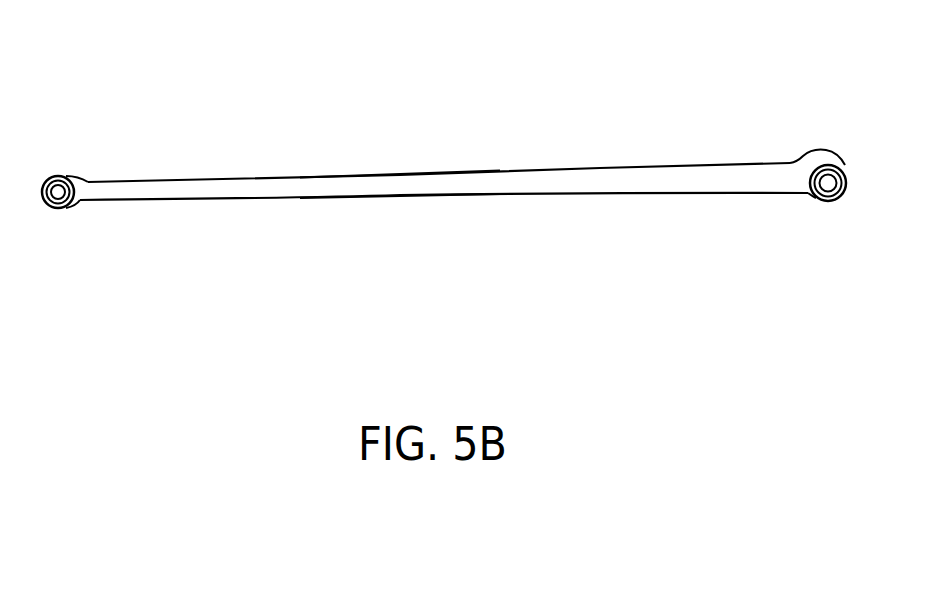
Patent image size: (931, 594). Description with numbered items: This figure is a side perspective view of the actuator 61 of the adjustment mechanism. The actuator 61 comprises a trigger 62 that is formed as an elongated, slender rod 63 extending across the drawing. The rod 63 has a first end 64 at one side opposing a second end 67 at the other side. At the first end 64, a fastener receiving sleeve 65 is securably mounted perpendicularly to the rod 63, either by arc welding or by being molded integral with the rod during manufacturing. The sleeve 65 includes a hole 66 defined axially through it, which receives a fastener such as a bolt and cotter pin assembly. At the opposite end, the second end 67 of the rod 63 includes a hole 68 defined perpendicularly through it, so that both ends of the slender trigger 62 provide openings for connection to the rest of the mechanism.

The actuator 61 is at (348, 147).
The trigger 62 is at (495, 168).
The rod 63 is at (400, 196).
The first end 64 is at (800, 160).
The fastener receiving sleeve 65 is at (817, 150).
The hole 66 is at (828, 192).
The second end 67 is at (88, 182).
The hole 68 is at (60, 205).